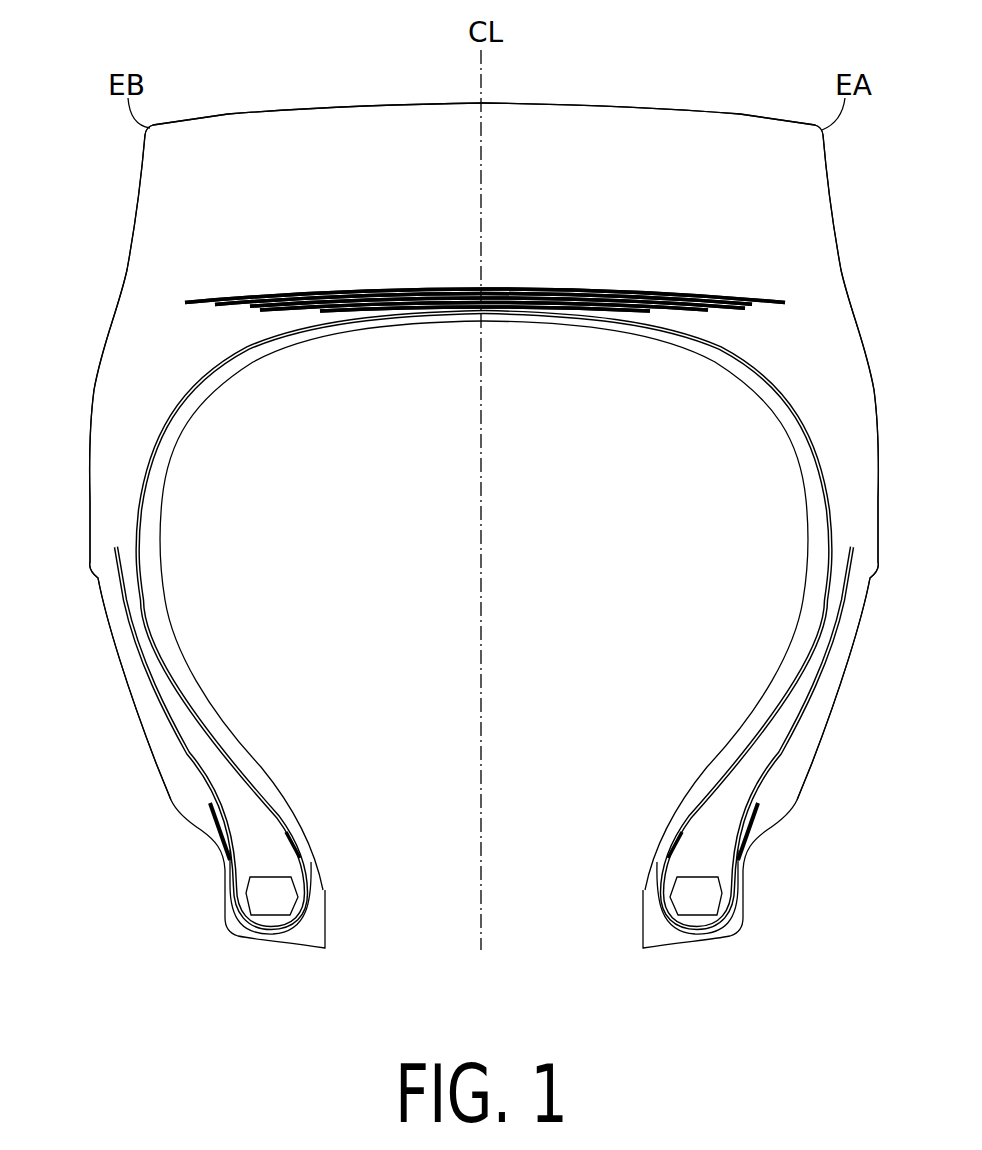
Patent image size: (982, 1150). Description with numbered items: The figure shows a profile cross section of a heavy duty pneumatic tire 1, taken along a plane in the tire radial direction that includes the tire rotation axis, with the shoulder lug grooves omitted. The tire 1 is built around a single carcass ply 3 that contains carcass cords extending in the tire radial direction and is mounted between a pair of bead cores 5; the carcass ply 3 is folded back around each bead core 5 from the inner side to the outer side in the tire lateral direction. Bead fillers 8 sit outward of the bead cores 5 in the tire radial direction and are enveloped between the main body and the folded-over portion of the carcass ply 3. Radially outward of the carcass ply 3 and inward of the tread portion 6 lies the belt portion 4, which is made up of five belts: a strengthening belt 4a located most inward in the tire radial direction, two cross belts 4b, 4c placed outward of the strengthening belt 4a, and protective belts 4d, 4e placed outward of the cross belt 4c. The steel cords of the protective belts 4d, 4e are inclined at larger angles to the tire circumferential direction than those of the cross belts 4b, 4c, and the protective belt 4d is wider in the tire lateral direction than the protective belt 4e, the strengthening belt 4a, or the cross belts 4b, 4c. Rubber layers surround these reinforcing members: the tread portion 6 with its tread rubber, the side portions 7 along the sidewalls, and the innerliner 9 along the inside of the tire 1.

The pneumatic tire 1 is at (611, 85).
The carcass ply 3 is at (777, 398).
The belt portion 4 is at (778, 285).
The strengthening belt 4a is at (693, 337).
The cross belt 4b is at (739, 311).
The cross belt 4c is at (648, 314).
The protective belt 4d is at (738, 294).
The protective belt 4e is at (701, 289).
The bead core 5 is at (298, 898).
The tread portion 6 is at (685, 136).
The side portion 7 is at (840, 438).
The bead filler 8 is at (227, 785).
The innerliner 9 is at (223, 372).